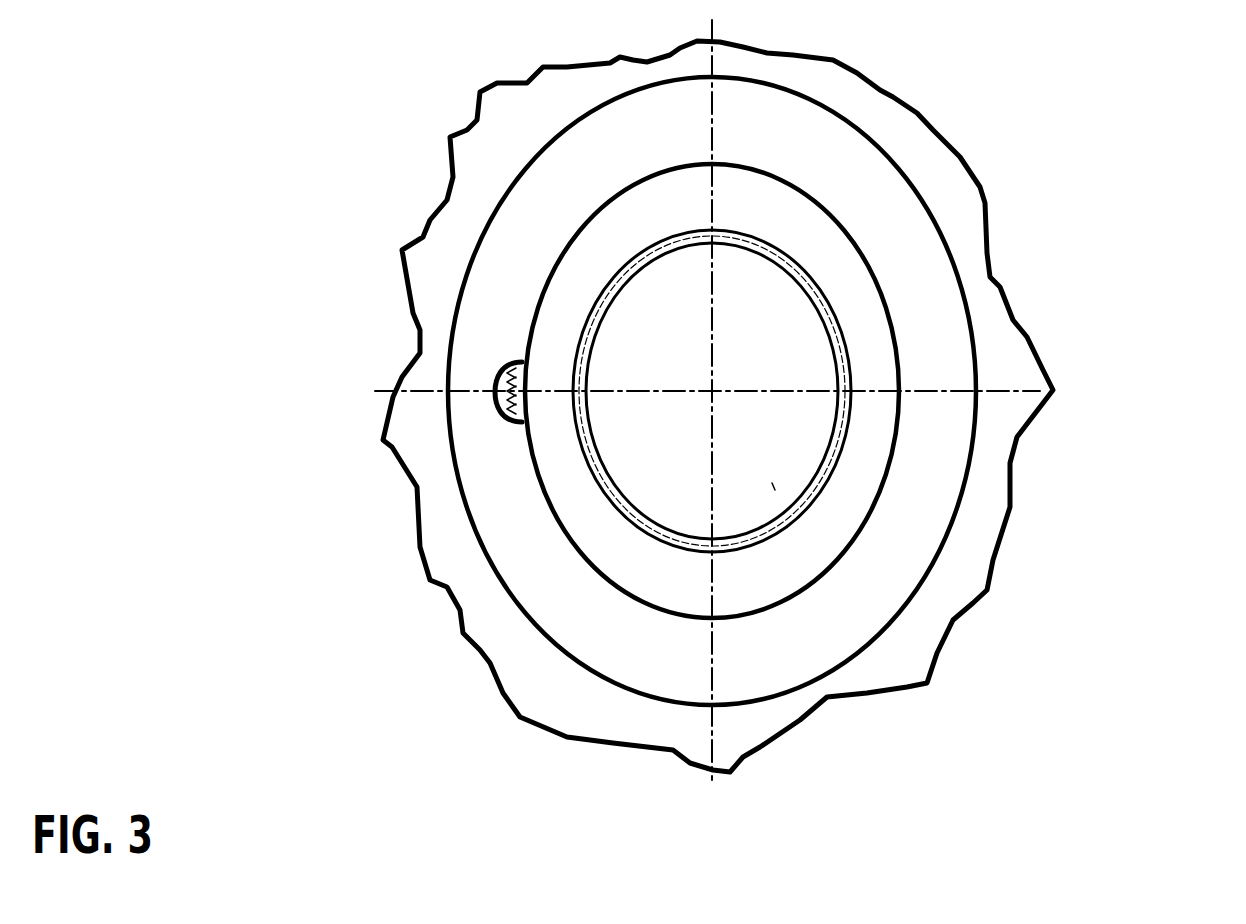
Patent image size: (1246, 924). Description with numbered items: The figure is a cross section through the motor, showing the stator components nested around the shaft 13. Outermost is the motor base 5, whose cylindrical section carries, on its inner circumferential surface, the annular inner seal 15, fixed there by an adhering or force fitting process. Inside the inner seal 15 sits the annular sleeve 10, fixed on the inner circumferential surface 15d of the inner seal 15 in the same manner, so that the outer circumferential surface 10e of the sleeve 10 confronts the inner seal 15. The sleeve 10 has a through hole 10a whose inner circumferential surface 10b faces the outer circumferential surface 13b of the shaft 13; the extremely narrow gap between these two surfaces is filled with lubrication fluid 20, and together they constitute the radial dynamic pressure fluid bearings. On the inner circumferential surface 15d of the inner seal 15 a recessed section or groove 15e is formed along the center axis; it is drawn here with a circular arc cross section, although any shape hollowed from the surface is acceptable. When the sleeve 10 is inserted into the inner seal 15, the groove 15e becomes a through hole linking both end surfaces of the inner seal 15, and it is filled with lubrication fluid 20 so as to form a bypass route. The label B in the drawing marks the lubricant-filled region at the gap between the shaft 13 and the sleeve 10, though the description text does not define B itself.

The motor base 5 is at (518, 658).
The inner seal 15 is at (503, 262).
The inner circumferential surface of the inner seal 15d is at (900, 435).
The groove 15e is at (495, 378).
The sleeve 10 is at (838, 268).
The through hole of the sleeve 10a is at (772, 483).
The inner circumferential surface of the through hole 10b is at (773, 486).
The outer circumferential surface of the sleeve 10e is at (900, 363).
The shaft 13 is at (760, 330).
The outer circumferential surface of the shaft 13b is at (772, 483).
The lubrication fluid 20 is at (502, 418).
The weld bead B(h3) B is at (607, 500).